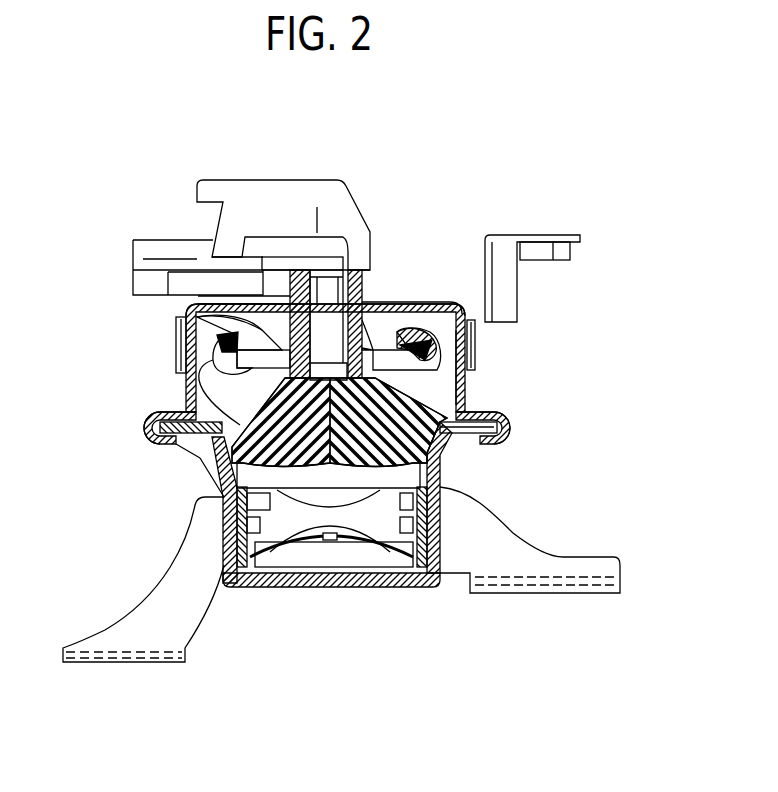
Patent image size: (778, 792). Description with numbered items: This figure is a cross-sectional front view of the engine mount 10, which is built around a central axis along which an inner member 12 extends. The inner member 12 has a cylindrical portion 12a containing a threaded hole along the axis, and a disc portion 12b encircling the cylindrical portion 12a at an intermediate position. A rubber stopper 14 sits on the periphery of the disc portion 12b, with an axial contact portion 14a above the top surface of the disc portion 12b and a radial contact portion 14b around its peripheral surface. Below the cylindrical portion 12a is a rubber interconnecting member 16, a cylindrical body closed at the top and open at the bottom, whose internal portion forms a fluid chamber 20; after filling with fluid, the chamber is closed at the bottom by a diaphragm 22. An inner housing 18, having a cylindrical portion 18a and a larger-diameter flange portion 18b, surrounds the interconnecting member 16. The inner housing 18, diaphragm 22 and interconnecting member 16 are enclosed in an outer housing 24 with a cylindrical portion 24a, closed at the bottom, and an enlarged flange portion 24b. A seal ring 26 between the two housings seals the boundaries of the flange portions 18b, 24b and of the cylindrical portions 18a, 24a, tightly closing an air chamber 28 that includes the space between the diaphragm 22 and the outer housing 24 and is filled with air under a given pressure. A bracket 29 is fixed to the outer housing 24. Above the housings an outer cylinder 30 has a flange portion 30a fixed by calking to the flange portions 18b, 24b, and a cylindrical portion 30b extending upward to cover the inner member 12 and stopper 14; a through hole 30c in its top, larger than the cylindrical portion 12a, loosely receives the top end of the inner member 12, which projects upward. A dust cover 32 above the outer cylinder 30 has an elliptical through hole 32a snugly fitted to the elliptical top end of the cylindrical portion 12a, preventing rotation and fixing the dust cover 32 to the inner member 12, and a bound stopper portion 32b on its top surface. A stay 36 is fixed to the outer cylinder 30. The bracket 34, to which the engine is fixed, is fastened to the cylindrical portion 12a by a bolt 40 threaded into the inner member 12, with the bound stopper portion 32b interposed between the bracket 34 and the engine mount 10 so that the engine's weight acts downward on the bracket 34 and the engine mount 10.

The engine mount 10 is at (527, 425).
The inner member 12 is at (364, 272).
The cylindrical portion 12a is at (395, 318).
The disc portion 12b is at (407, 318).
The stopper 14 is at (213, 347).
The axial contact portion 14a is at (217, 322).
The radial contact portion 14b is at (210, 362).
The interconnecting member 16 is at (220, 407).
The inner housing 18 is at (443, 465).
The cylindrical portion 18a is at (470, 490).
The flange portion 18b is at (465, 436).
The fluid chamber 20 is at (237, 520).
The diaphragm 22 is at (367, 547).
The outer housing 24 is at (261, 603).
The cylindrical portion 24a is at (227, 553).
The flange portion 24b is at (183, 448).
The seal ring 26 is at (202, 450).
The air chamber 28 is at (310, 550).
The bracket 29 is at (153, 632).
The outer cylinder 30 is at (476, 388).
The flange portion 30a is at (508, 434).
The cylindrical portion 30b is at (467, 377).
The through hole 30c is at (258, 300).
The dust cover 32 is at (487, 344).
The through hole 32a is at (374, 293).
The bound stopper portion 32b is at (247, 297).
The bracket 34 is at (290, 180).
The stay 36 is at (580, 233).
The bolt 40 is at (327, 288).